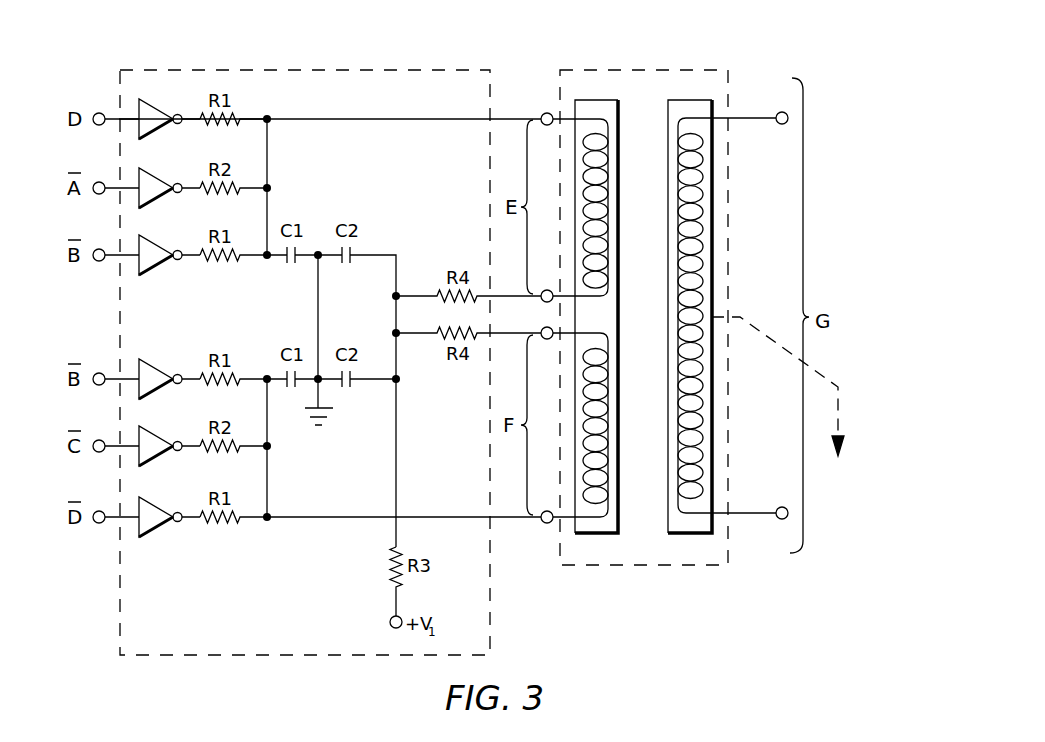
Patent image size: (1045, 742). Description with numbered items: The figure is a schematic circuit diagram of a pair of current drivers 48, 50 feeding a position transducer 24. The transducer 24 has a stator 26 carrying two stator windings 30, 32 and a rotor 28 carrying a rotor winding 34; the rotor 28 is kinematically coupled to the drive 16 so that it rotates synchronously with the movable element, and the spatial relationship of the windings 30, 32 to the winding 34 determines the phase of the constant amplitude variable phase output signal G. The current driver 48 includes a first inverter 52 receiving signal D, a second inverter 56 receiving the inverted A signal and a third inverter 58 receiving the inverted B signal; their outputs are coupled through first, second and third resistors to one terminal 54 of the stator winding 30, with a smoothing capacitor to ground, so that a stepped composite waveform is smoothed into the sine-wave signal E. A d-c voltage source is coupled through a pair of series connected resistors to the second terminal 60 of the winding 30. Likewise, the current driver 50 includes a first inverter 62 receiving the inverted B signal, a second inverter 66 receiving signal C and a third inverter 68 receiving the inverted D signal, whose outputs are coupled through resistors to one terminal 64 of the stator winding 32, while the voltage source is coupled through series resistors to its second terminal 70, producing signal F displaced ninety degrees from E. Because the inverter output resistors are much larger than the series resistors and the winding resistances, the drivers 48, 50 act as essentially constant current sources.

The drive 16 is at (794, 421).
The position transducer 24 is at (620, 566).
The stator 26 is at (605, 527).
The rotor 28 is at (681, 525).
The stator winding 30 is at (581, 188).
The stator winding 32 is at (581, 478).
The rotor winding 34 is at (713, 455).
The current driver 48 is at (305, 337).
The current driver 50 is at (303, 68).
The first inverter 52 is at (160, 106).
The terminal 54 is at (542, 114).
The second inverter 56 is at (160, 175).
The third inverter 58 is at (160, 242).
The second terminal 60 is at (546, 290).
The first inverter 62 is at (160, 366).
The terminal 64 is at (547, 523).
The second inverter 66 is at (160, 433).
The third inverter 68 is at (160, 504).
The second terminal 70 is at (547, 339).